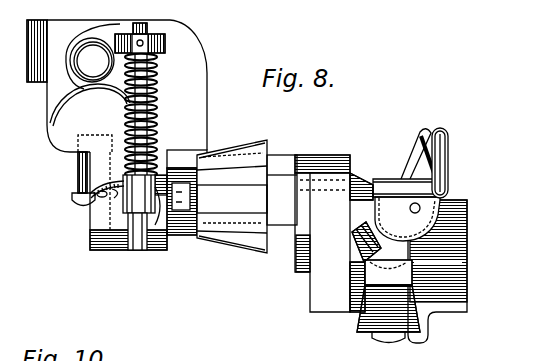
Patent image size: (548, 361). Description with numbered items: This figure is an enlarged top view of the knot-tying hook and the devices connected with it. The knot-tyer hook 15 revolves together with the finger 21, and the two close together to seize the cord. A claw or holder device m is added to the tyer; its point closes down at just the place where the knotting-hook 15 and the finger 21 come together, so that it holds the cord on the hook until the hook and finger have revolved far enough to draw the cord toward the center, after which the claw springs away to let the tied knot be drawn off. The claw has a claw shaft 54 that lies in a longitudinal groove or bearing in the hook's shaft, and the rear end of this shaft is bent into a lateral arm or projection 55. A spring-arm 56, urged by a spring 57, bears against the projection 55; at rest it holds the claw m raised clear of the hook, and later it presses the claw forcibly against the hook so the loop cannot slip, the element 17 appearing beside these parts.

The spring 57 is at (155, 98).
The spring-arm 56 is at (105, 181).
The lateral arm or projection 55 is at (78, 193).
The pinion gear 17 is at (232, 196).
The claw shaft 54 is at (380, 200).
The finger 21 is at (420, 135).
The knot-tyer hook 15 is at (445, 145).
The claw or holder device m is at (444, 172).